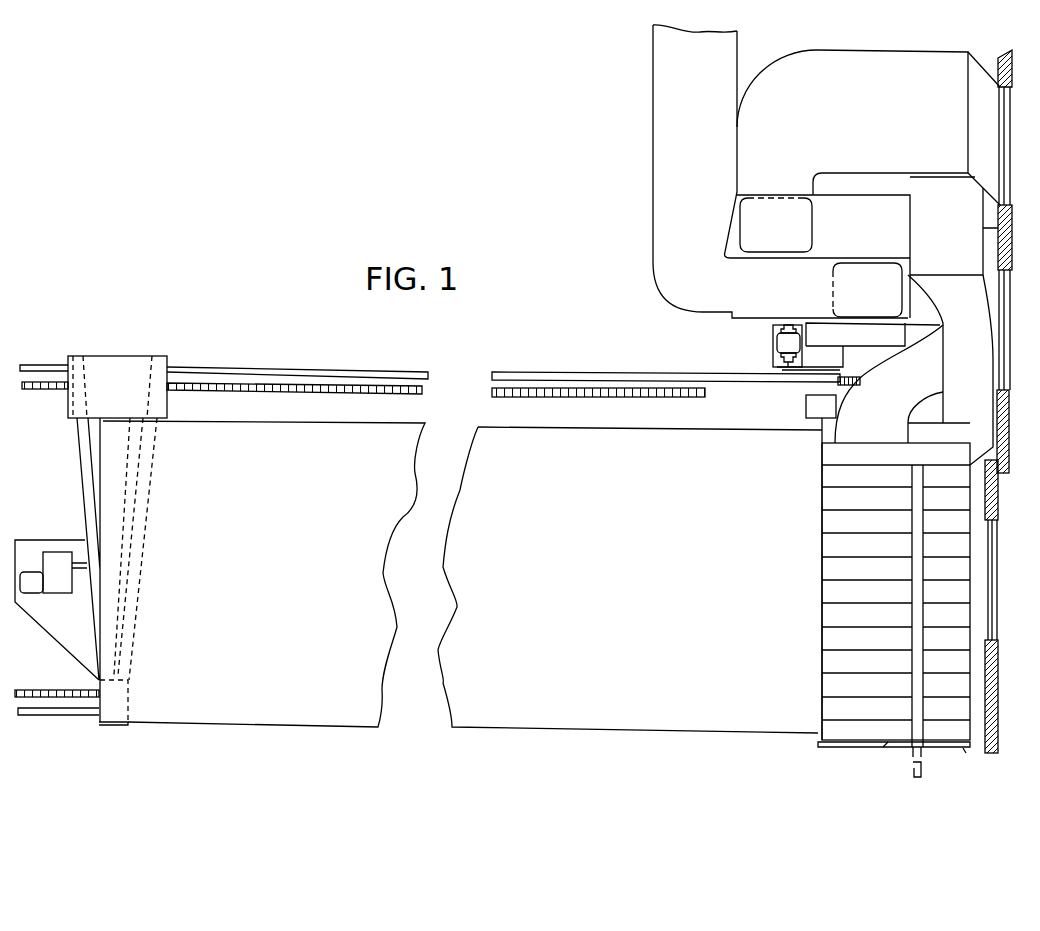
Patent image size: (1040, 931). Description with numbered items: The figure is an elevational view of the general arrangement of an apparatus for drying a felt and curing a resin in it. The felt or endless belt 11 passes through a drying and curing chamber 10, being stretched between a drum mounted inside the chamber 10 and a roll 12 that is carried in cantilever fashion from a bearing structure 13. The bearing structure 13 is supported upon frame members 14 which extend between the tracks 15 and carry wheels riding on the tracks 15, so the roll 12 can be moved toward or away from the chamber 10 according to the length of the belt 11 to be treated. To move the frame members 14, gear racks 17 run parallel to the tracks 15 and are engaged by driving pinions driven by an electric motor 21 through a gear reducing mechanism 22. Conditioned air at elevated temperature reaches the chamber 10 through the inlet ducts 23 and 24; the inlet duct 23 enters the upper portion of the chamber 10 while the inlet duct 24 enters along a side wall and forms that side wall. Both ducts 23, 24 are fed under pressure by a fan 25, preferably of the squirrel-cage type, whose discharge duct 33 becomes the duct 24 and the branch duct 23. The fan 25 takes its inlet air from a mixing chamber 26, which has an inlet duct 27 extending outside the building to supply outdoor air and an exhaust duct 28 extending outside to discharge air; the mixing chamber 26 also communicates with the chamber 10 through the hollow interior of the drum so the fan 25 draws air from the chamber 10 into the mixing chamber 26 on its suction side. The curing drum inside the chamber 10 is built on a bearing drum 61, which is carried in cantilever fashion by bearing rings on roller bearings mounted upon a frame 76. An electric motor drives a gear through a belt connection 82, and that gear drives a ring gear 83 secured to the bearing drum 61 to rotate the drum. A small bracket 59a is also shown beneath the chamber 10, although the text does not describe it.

The drying and curing chamber 10 is at (832, 546).
The endless belt 11 is at (638, 428).
The roll 12 is at (113, 725).
The bearing structure 13 is at (168, 400).
The frame members 14 is at (80, 478).
The tracks 15 is at (198, 365).
The gear racks 17 is at (270, 387).
The electric motor 21 is at (32, 590).
The gear reducing mechanism 22 is at (53, 557).
The inlet duct 23 is at (891, 435).
The inlet duct 24 is at (985, 416).
The fan 25 is at (961, 242).
The mixing chamber 26 is at (879, 240).
The inlet duct 27 is at (893, 149).
The exhaust duct 28 is at (710, 216).
The discharge duct 33 is at (987, 302).
The bracket 59a is at (913, 768).
The bearing drum 61 is at (826, 366).
The frame 76 is at (851, 348).
The belt connection 82 is at (803, 375).
The ring gear 83 is at (848, 377).